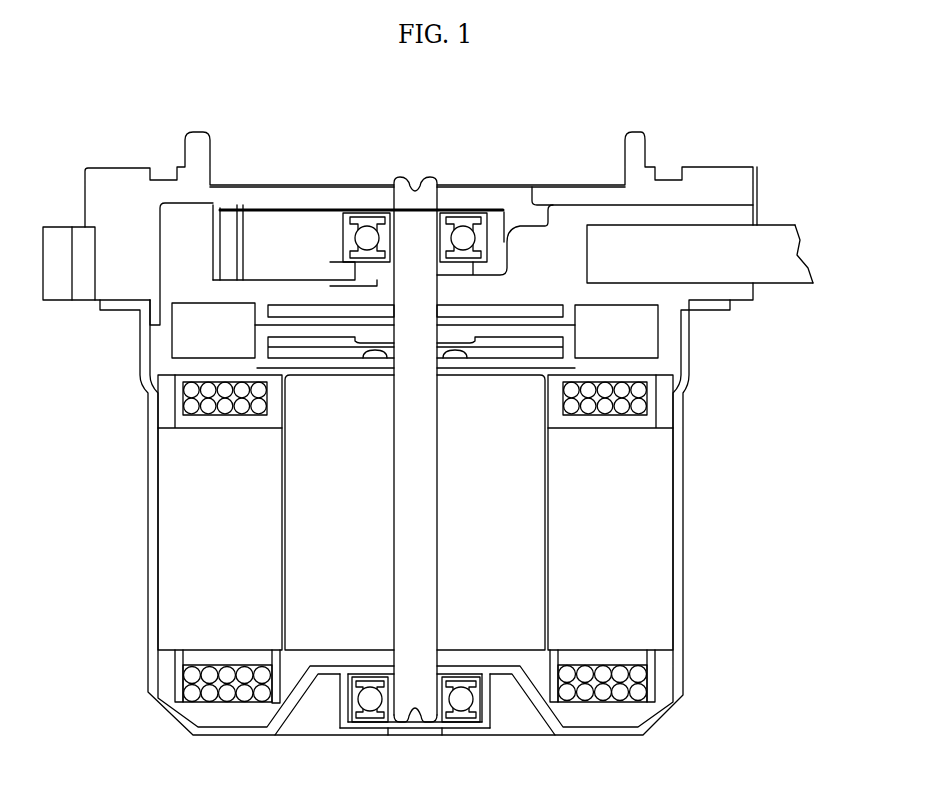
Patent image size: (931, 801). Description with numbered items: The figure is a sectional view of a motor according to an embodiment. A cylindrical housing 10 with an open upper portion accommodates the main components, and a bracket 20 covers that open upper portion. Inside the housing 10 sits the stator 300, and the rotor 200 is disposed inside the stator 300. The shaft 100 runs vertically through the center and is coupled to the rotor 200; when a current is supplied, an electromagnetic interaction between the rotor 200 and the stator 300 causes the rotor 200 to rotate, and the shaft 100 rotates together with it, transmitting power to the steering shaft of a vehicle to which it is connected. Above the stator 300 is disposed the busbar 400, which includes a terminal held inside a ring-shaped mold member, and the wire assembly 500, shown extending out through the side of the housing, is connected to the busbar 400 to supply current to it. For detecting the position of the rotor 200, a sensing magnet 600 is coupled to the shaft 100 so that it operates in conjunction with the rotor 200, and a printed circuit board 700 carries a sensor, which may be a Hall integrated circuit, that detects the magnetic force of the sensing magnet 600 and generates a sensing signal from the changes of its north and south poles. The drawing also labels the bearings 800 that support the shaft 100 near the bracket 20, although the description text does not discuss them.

The housing 10 is at (689, 331).
The bracket 20 is at (757, 186).
The shaft 100 is at (418, 600).
The rotor 200 is at (495, 503).
The stator 300 is at (630, 473).
The busbar 400 is at (669, 352).
The wire assembly 500 is at (780, 293).
The sensing magnet 600 is at (257, 345).
The printed circuit board 700 is at (257, 306).
The bearing 800 is at (480, 219).